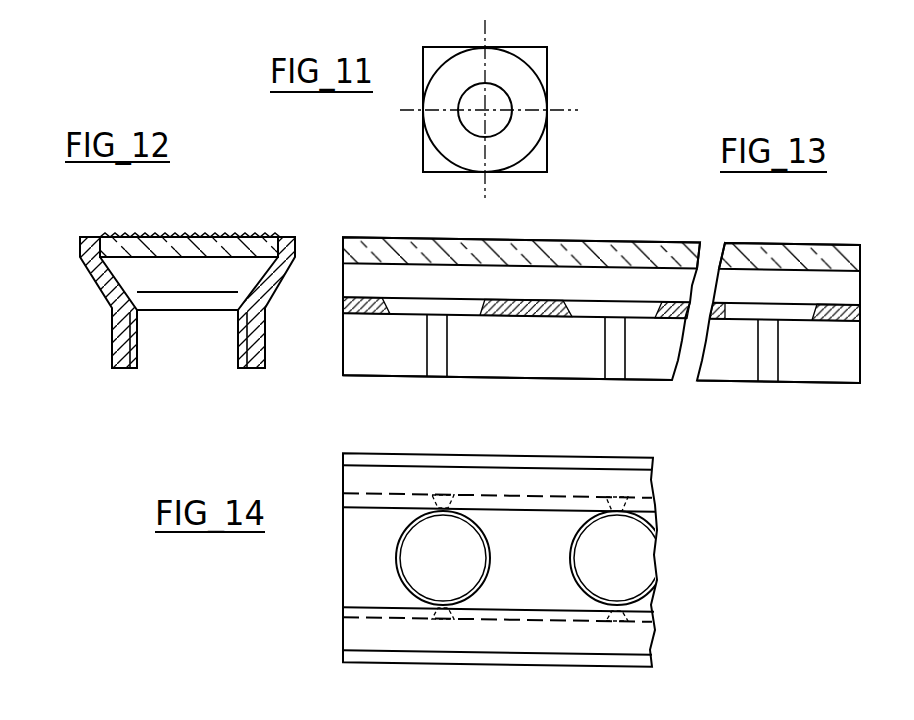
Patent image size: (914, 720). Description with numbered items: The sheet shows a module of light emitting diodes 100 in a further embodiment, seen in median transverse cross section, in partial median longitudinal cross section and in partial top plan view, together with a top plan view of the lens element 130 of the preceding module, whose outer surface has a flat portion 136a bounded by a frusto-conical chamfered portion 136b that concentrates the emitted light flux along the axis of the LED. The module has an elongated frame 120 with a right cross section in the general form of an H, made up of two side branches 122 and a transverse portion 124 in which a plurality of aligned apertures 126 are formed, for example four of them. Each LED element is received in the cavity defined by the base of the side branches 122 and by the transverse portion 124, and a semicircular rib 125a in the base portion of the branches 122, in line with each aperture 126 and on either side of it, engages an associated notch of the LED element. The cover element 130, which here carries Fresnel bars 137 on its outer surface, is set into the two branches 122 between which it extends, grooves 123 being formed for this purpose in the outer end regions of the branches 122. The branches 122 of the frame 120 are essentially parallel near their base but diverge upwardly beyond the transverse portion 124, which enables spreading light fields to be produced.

In FIG. 12, the cutting insert 100 is at (165, 378).
In FIG. 14, the cutting insert 100 is at (678, 572).
In FIG. 12, the elongated frame 120 is at (88, 320).
In FIG. 12, the side branches 122 is at (112, 290).
In FIG. 13, the side branches 122 is at (394, 352).
In FIG. 14, the side branches 122 is at (356, 482).
In FIG. 12, the grooves 123 is at (99, 239).
In FIG. 13, the transverse portion 124 is at (519, 313).
In FIG. 14, the transverse portion 124 is at (356, 577).
In FIG. 12, the semicircular rib 125a is at (248, 353).
In FIG. 13, the semicircular rib 125a is at (437, 357).
In FIG. 14, the semicircular rib 125a is at (443, 495).
In FIG. 12, the apertures 126 is at (172, 303).
In FIG. 13, the apertures 126 is at (433, 308).
In FIG. 14, the apertures 126 is at (466, 573).
In FIG. 11, the cover element 130 is at (538, 63).
In FIG. 12, the cover element 130 is at (136, 240).
In FIG. 13, the cover element 130 is at (506, 257).
In FIG. 11, the flat portion of outer surface 136a is at (496, 101).
In FIG. 11, the frusto-conical chamfered portion 136b is at (520, 133).
In FIG. 12, the Fresnel bars 137 is at (234, 237).